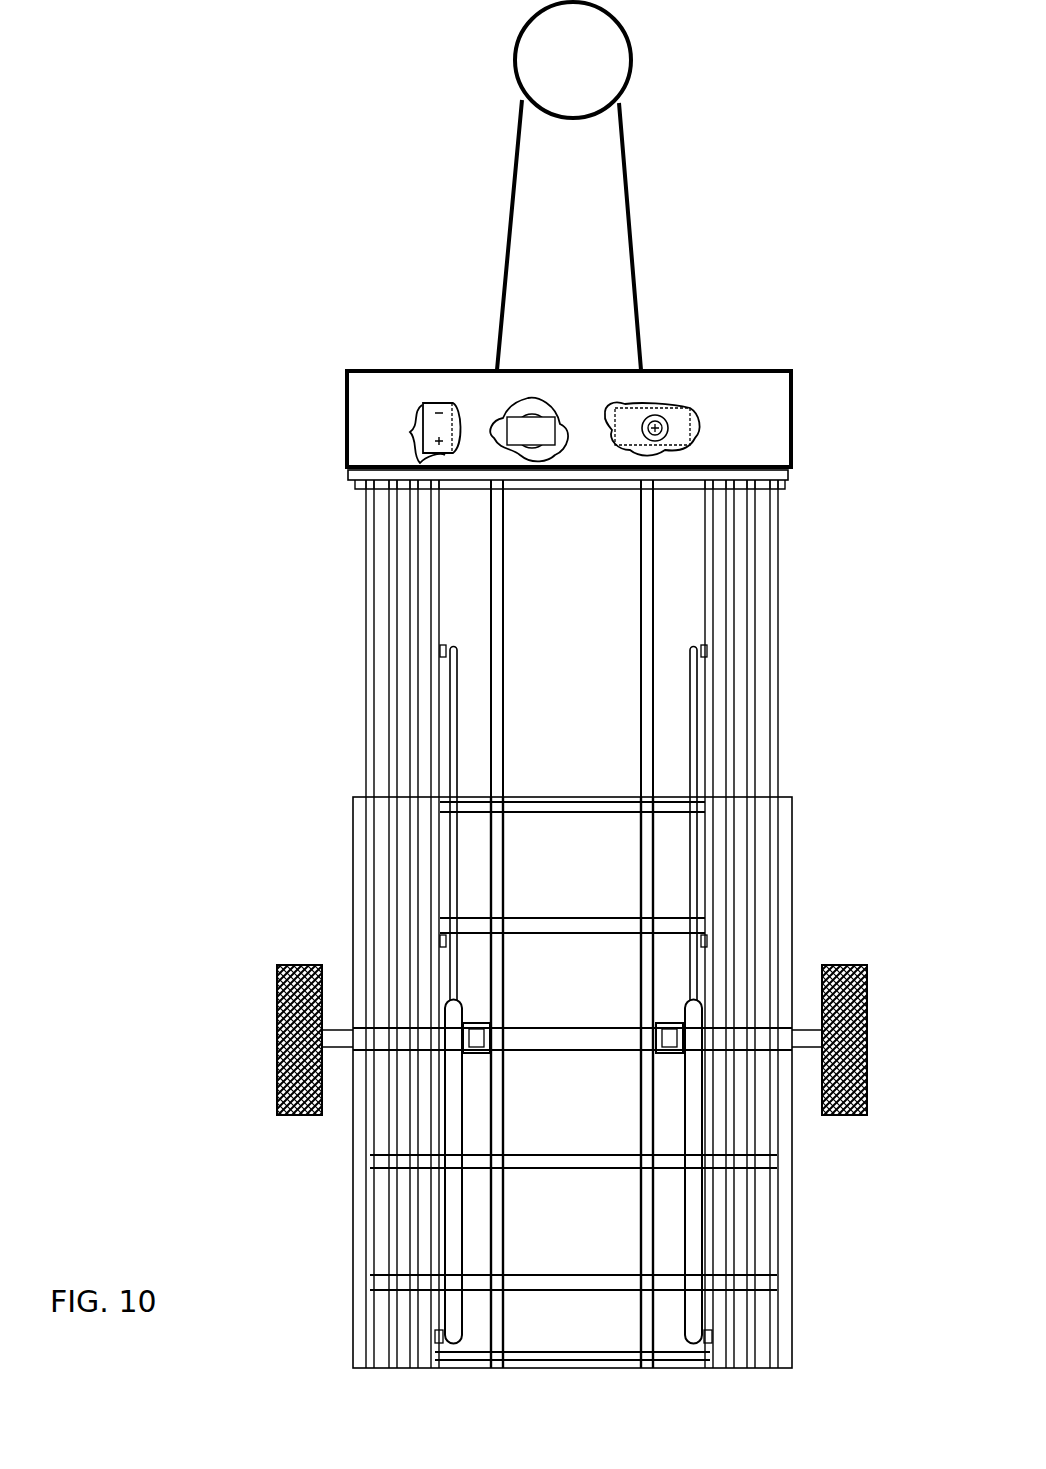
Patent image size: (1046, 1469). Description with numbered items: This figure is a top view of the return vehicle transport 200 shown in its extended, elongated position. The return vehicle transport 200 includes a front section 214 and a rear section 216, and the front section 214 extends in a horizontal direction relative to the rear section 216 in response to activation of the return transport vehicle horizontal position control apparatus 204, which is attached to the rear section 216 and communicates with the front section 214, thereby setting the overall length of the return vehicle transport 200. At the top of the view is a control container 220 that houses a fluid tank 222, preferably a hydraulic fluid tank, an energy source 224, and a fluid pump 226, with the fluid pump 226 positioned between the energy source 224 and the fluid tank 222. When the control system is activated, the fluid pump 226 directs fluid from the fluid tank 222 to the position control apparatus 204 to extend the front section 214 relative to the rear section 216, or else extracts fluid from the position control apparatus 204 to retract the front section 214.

The return vehicle transport 200 is at (709, 112).
The return transport vehicle horizontal position control apparatus 204 is at (692, 1087).
The front section 214 is at (770, 664).
The rear section 216 is at (788, 1228).
The control container 220 is at (752, 388).
The fluid tank 222 is at (633, 420).
The energy source 224 is at (443, 418).
The fluid pump 226 is at (548, 447).